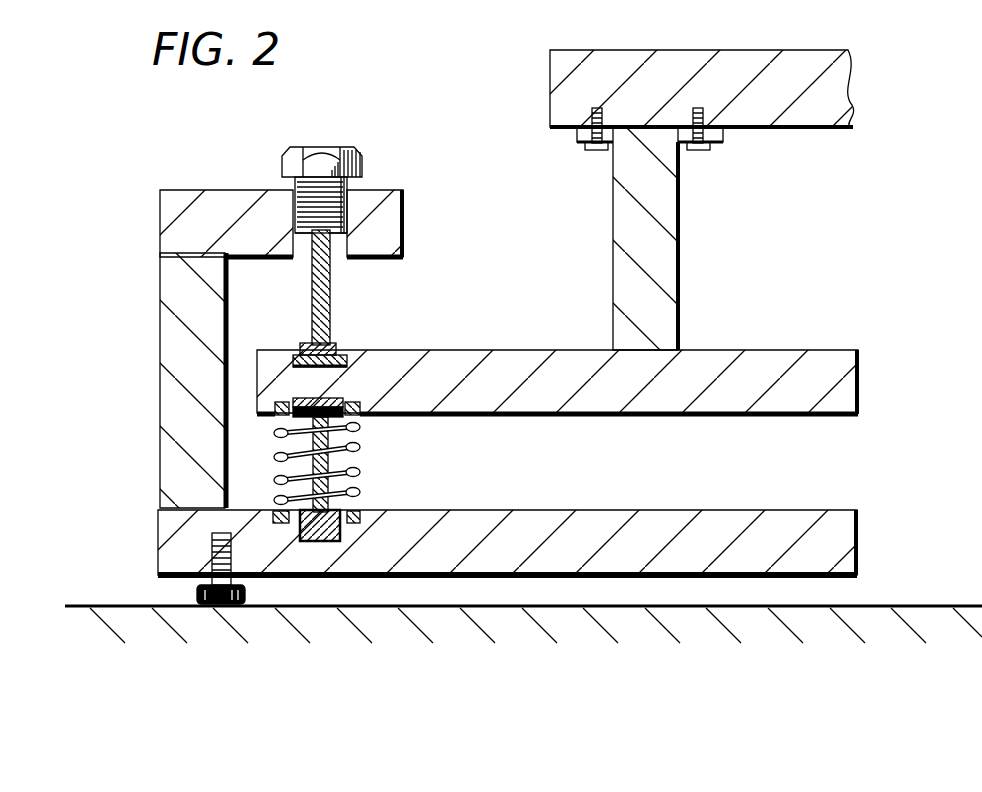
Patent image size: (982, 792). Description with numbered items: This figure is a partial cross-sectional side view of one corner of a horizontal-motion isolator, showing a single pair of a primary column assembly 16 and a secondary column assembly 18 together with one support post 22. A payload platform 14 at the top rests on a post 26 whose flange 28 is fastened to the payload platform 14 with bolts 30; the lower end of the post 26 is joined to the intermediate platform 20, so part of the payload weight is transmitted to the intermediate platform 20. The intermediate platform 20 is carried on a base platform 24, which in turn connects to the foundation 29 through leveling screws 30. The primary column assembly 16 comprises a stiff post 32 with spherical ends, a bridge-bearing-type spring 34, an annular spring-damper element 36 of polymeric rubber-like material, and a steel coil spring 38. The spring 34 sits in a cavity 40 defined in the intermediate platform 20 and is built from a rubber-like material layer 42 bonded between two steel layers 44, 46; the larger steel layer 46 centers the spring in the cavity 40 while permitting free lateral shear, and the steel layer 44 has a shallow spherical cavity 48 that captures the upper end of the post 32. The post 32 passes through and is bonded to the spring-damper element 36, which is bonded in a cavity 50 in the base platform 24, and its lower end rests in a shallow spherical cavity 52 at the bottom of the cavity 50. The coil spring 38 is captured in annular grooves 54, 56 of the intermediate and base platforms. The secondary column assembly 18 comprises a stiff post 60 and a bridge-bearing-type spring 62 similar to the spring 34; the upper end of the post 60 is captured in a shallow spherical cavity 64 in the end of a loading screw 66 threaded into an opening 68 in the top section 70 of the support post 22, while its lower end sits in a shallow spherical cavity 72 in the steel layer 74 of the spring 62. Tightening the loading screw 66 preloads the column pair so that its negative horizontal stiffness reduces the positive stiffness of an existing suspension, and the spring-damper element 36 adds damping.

The payload platform 14 is at (666, 50).
The primary column assembly 16 is at (309, 523).
The secondary column assembly 18 is at (380, 298).
The intermediate platform 20 is at (785, 350).
The support post 22 is at (160, 302).
The base platform 24 is at (703, 510).
The post 26 is at (679, 270).
The flange 28 is at (577, 138).
The foundation 29 is at (795, 600).
The bolts / leveling screws 30 is at (597, 152).
The stiff post 32 is at (362, 490).
The bridge-bearing-type spring 34 is at (362, 430).
The annular spring-damper element 36 is at (300, 515).
The steel coil spring 38 is at (285, 494).
The cavity 40 is at (355, 400).
The rubber-like material layer 42 is at (275, 460).
The steel layer 44 is at (275, 436).
The steel layer 46 is at (322, 398).
The shallow spherical cavity 48 is at (358, 470).
The cavity 50 is at (340, 528).
The shallow spherical cavity 52 is at (327, 542).
The annular groove 54 is at (277, 407).
The annular groove 56 is at (285, 520).
The stiff post 60 is at (312, 290).
The bridge-bearing-type spring 62 is at (340, 348).
The shallow spherical cavity 64 is at (350, 215).
The loading screw 66 is at (320, 147).
The opening 68 is at (355, 200).
The top section 70 is at (240, 190).
The shallow spherical cavity 72 is at (330, 340).
The steel layer 74 is at (305, 345).